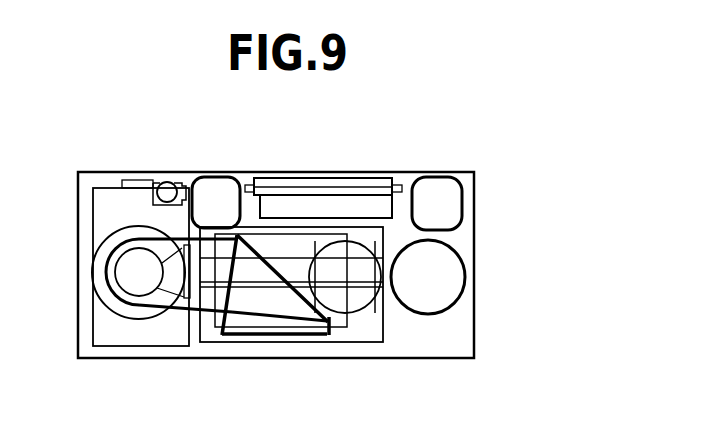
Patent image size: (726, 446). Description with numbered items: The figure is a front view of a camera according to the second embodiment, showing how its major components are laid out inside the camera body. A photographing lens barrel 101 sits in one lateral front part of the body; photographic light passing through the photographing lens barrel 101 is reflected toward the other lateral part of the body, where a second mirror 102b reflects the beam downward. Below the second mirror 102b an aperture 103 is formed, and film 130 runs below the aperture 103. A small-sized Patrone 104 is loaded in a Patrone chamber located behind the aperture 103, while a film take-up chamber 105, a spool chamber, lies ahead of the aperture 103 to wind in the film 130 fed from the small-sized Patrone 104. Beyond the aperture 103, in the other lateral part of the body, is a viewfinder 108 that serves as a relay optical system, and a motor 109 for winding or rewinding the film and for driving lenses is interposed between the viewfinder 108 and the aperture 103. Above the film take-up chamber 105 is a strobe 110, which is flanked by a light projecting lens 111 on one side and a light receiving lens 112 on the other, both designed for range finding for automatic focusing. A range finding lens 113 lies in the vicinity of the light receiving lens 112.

The photographing lens barrel 101 is at (127, 310).
The aperture 103 is at (223, 340).
The film 130 is at (267, 337).
The second mirror 102b is at (327, 332).
The film take-up chamber 105 is at (347, 330).
The small-sized Patrone 104 is at (375, 325).
The motor 109 is at (362, 302).
The viewfinder 108 is at (447, 260).
The light projecting lens 111 is at (452, 190).
The strobe 110 is at (357, 182).
The light receiving lens 112 is at (227, 183).
The range finding lens 113 is at (162, 182).